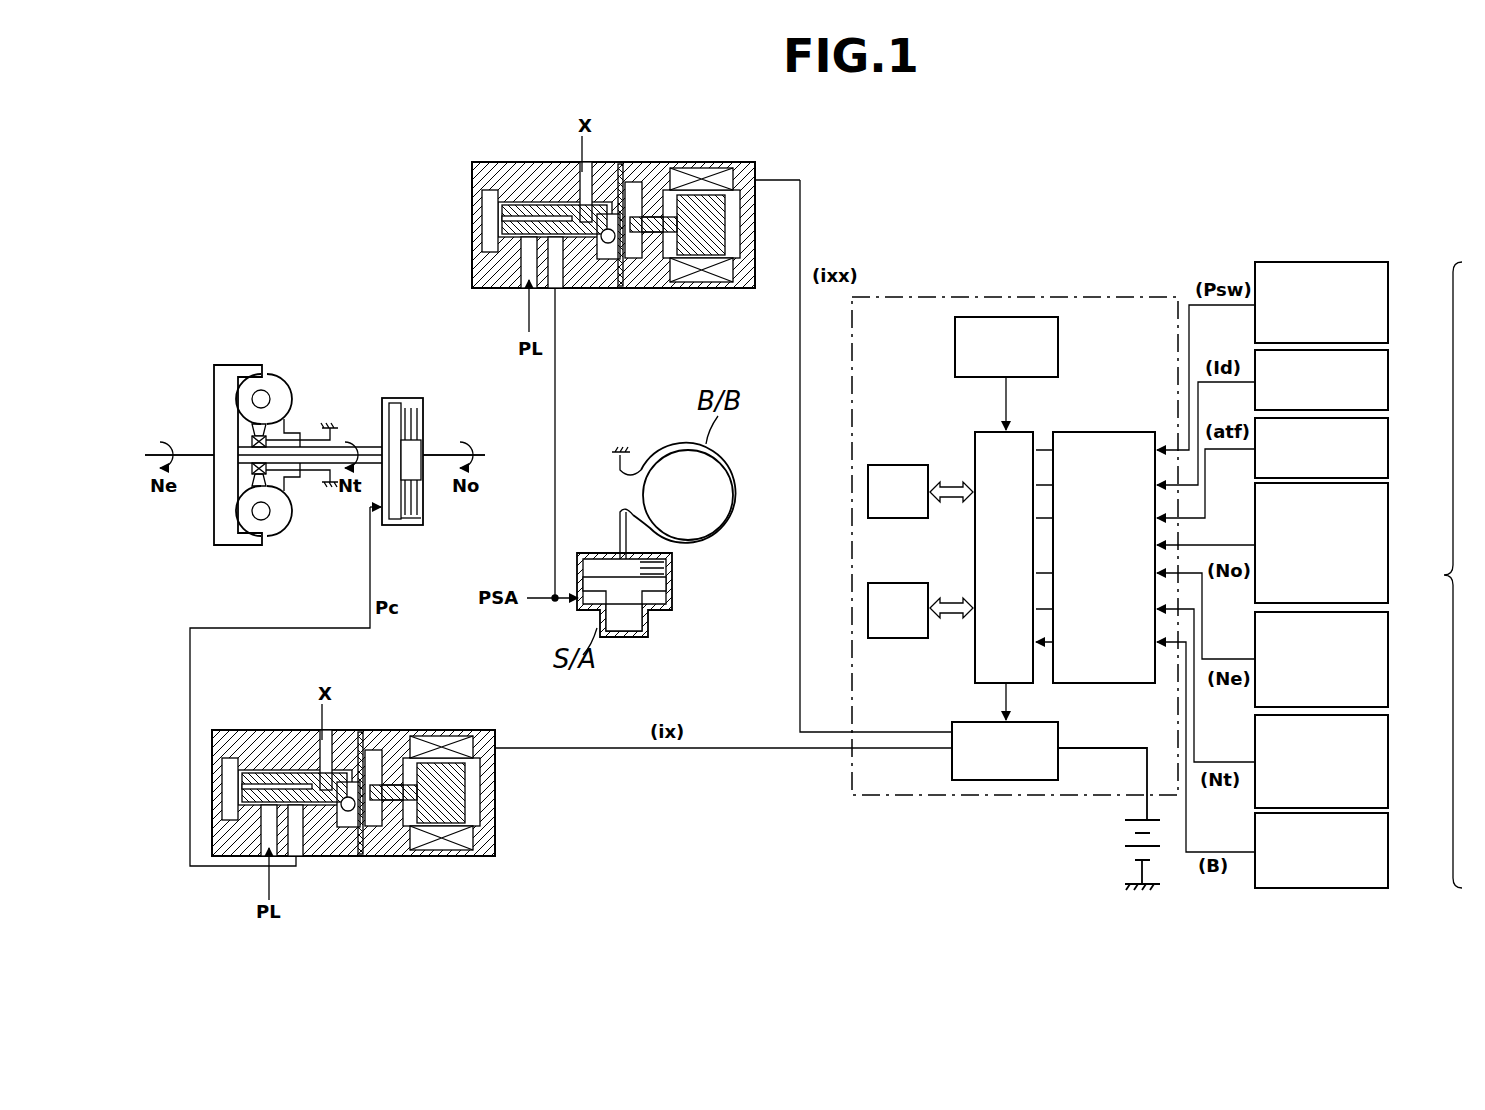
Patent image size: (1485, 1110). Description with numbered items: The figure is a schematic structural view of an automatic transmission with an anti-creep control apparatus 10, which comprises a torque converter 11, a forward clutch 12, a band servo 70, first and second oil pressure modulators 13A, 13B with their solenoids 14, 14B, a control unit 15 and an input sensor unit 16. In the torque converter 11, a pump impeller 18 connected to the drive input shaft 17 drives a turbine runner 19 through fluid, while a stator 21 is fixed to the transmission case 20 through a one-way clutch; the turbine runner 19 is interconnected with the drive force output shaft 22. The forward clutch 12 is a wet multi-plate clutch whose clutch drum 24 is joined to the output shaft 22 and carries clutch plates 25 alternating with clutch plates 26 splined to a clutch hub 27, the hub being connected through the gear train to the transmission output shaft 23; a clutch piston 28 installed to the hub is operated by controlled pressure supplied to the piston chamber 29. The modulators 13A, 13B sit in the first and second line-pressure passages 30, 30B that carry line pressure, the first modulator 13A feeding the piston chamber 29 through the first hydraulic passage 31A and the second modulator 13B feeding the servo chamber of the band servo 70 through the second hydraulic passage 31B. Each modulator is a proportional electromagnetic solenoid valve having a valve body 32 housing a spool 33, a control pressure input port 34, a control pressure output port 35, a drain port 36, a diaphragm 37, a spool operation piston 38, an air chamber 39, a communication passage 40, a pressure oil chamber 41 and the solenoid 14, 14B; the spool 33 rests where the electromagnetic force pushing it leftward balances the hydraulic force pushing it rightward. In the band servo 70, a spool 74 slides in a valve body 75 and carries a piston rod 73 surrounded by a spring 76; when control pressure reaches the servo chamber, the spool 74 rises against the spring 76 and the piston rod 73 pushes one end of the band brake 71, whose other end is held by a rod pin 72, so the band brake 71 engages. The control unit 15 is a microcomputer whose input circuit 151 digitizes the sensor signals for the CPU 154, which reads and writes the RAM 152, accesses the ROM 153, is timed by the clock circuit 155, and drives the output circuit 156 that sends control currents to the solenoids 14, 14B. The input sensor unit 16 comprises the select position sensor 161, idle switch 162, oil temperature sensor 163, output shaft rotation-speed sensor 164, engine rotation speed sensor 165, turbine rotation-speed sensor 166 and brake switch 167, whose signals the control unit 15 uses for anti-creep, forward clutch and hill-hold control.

The automatic transmission with anti-creep control apparatus 10 is at (858, 137).
The torque converter 11 is at (237, 363).
The forward clutch 12 is at (400, 396).
The first oil pressure modulator 13A is at (288, 728).
The second oil pressure modulator 13B is at (546, 160).
The solenoid 14 is at (450, 738).
The solenoid 14B is at (710, 170).
The control unit 15 is at (1125, 297).
The input sensor unit 16 is at (1464, 575).
The drive input shaft 17 is at (190, 452).
The pump impeller 18 is at (285, 388).
The turbine runner 19 is at (228, 533).
The transmission case 20 is at (280, 488).
The stator 21 is at (262, 525).
The drive force output shaft 22 is at (368, 445).
The transmission output shaft 23 is at (428, 450).
The clutch drum 24 is at (418, 408).
The clutch plates 25 is at (418, 425).
The clutch plates 26 is at (421, 510).
The clutch hub 27 is at (422, 492).
The clutch piston 28 is at (393, 522).
The piston chamber 29 is at (380, 510).
The first line-pressure passage 30 is at (276, 868).
The second line-pressure passage 30B is at (525, 318).
The first hydraulic passage 31A is at (288, 628).
The second hydraulic passage 31B is at (554, 440).
The valve body 32 is at (497, 162).
The spool 33 is at (606, 192).
The control pressure input port 34 is at (516, 248).
The control pressure output port 35 is at (566, 250).
The drain port 36 is at (590, 185).
The diaphragm 37 is at (621, 248).
The spool operation piston 38 is at (712, 255).
The air chamber 39 is at (677, 255).
The communication passage 40 is at (522, 212).
The pressure oil chamber 41 is at (487, 215).
The band servo 70 is at (652, 642).
The band brake 71 is at (736, 464).
The rod pin 72 is at (610, 470).
The piston rod 73 is at (617, 523).
The spool 74 is at (668, 586).
The valve body 75 is at (660, 614).
The spring 76 is at (660, 573).
The input circuit 151 is at (1105, 684).
The RAM 152 is at (893, 465).
The ROM 153 is at (893, 583).
The CPU 154 is at (1034, 432).
The clock circuit 155 is at (1059, 352).
The output circuit 156 is at (950, 728).
The select position sensor 161 is at (1388, 322).
The idle switch 162 is at (1388, 385).
The oil temperature sensor 163 is at (1388, 452).
The output shaft rotation-speed sensor 164 is at (1388, 548).
The engine rotation speed sensor 165 is at (1388, 658).
The turbine rotation-speed sensor 166 is at (1388, 760).
The brake switch 167 is at (1388, 855).